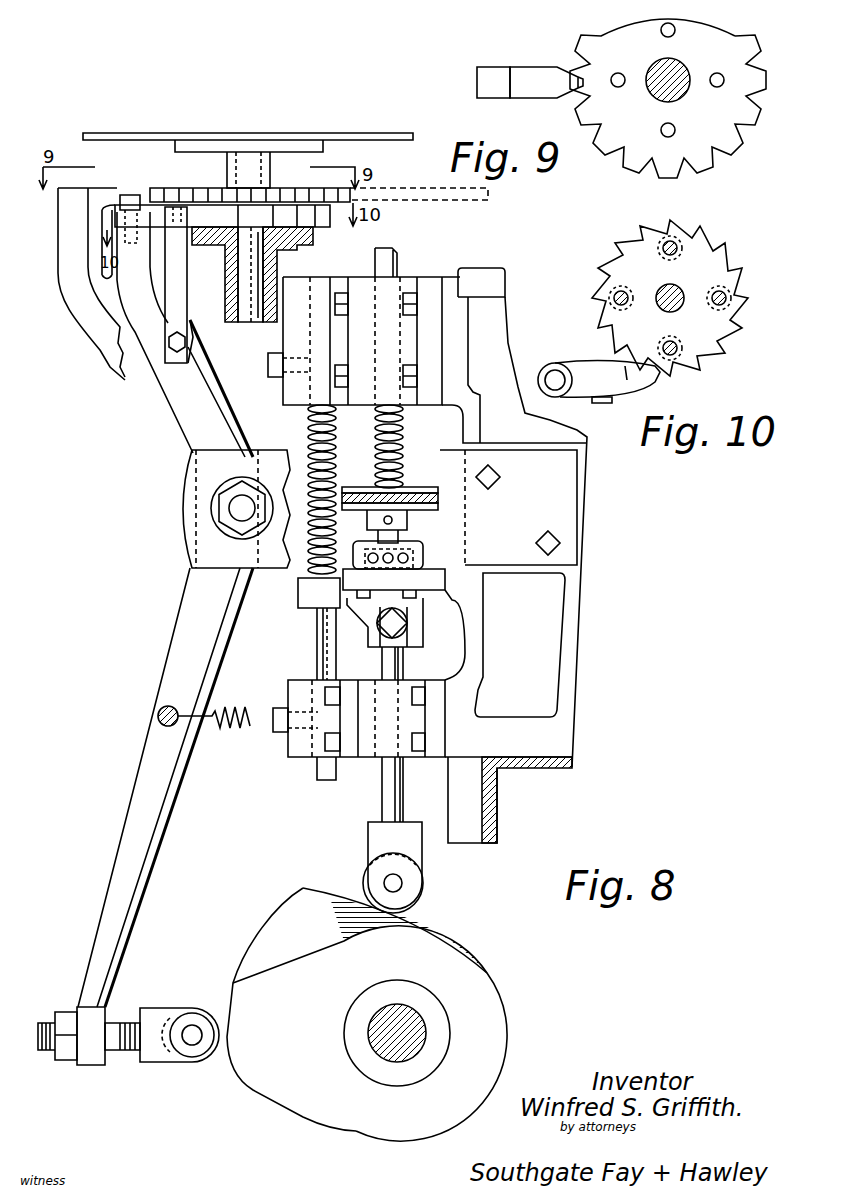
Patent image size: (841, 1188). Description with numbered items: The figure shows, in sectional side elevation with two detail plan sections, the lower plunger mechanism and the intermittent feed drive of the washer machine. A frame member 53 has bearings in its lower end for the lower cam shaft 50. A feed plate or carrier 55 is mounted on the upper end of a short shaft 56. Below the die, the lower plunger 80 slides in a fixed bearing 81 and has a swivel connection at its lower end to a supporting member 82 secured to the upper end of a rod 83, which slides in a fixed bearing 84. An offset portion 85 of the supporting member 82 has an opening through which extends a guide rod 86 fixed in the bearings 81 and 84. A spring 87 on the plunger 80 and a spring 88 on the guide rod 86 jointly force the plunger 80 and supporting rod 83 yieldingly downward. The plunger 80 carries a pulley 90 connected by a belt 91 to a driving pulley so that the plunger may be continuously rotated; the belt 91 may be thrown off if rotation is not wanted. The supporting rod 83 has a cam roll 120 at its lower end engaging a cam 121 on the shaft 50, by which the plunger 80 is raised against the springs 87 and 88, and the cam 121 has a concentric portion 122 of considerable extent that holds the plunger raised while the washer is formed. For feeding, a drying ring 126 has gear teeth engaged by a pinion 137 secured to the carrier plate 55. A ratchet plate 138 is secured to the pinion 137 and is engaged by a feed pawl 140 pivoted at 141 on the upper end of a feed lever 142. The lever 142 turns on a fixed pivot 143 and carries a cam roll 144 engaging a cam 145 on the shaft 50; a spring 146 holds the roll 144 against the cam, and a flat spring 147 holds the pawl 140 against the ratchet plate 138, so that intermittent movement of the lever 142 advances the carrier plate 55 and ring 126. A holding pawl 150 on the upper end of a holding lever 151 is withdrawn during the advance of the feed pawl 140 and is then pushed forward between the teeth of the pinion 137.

In FIG. 8, the shaft 50 is at (420, 1035).
In FIG. 8, the frame member 53 is at (570, 650).
In FIG. 8, the feed plate or carrier 55 is at (248, 150).
In FIG. 9, the short shaft 56 is at (674, 74).
In FIG. 10, the short shaft 56 is at (679, 306).
In FIG. 8, the short shaft 56 is at (253, 323).
In FIG. 8, the lower plunger 80 is at (398, 255).
In FIG. 8, the fixed bearing 81 is at (358, 284).
In FIG. 8, the supporting member 82 is at (418, 616).
In FIG. 8, the rod 83 is at (382, 795).
In FIG. 8, the fixed bearing 84 is at (367, 687).
In FIG. 8, the offset portion 85 is at (298, 596).
In FIG. 8, the guide rod 86 is at (317, 651).
In FIG. 8, the spring 87 is at (403, 433).
In FIG. 8, the spring 88 is at (308, 430).
In FIG. 8, the pulley 90 is at (430, 485).
In FIG. 8, the belt 91 is at (438, 497).
In FIG. 8, the cam roll 120 is at (415, 893).
In FIG. 8, the cam 121 is at (453, 940).
In FIG. 8, the concentric portion 122 is at (296, 902).
In FIG. 8, the conveyer plate or drying ring 126 is at (443, 195).
In FIG. 9, the pinion 137 is at (745, 136).
In FIG. 8, the pinion 137 is at (187, 185).
In FIG. 10, the ratchet plate 138 is at (732, 269).
In FIG. 8, the ratchet plate 138 is at (320, 226).
In FIG. 10, the feed pawl 140 is at (592, 368).
In FIG. 8, the feed pawl 140 is at (195, 220).
In FIG. 10, the pivot 141 is at (552, 378).
In FIG. 8, the pivot 141 is at (138, 185).
In FIG. 8, the feed lever 142 is at (193, 417).
In FIG. 8, the fixed pivot 143 is at (230, 508).
In FIG. 8, the cam roll 144 is at (192, 1007).
In FIG. 8, the cam 145 is at (262, 1083).
In FIG. 8, the spring 146 is at (211, 736).
In FIG. 10, the flat spring 147 is at (603, 405).
In FIG. 8, the flat spring 147 is at (187, 288).
In FIG. 9, the holding pawl 150 is at (527, 73).
In FIG. 8, the holding pawl 150 is at (110, 195).
In FIG. 9, the holding lever 151 is at (478, 85).
In FIG. 8, the holding lever 151 is at (110, 337).